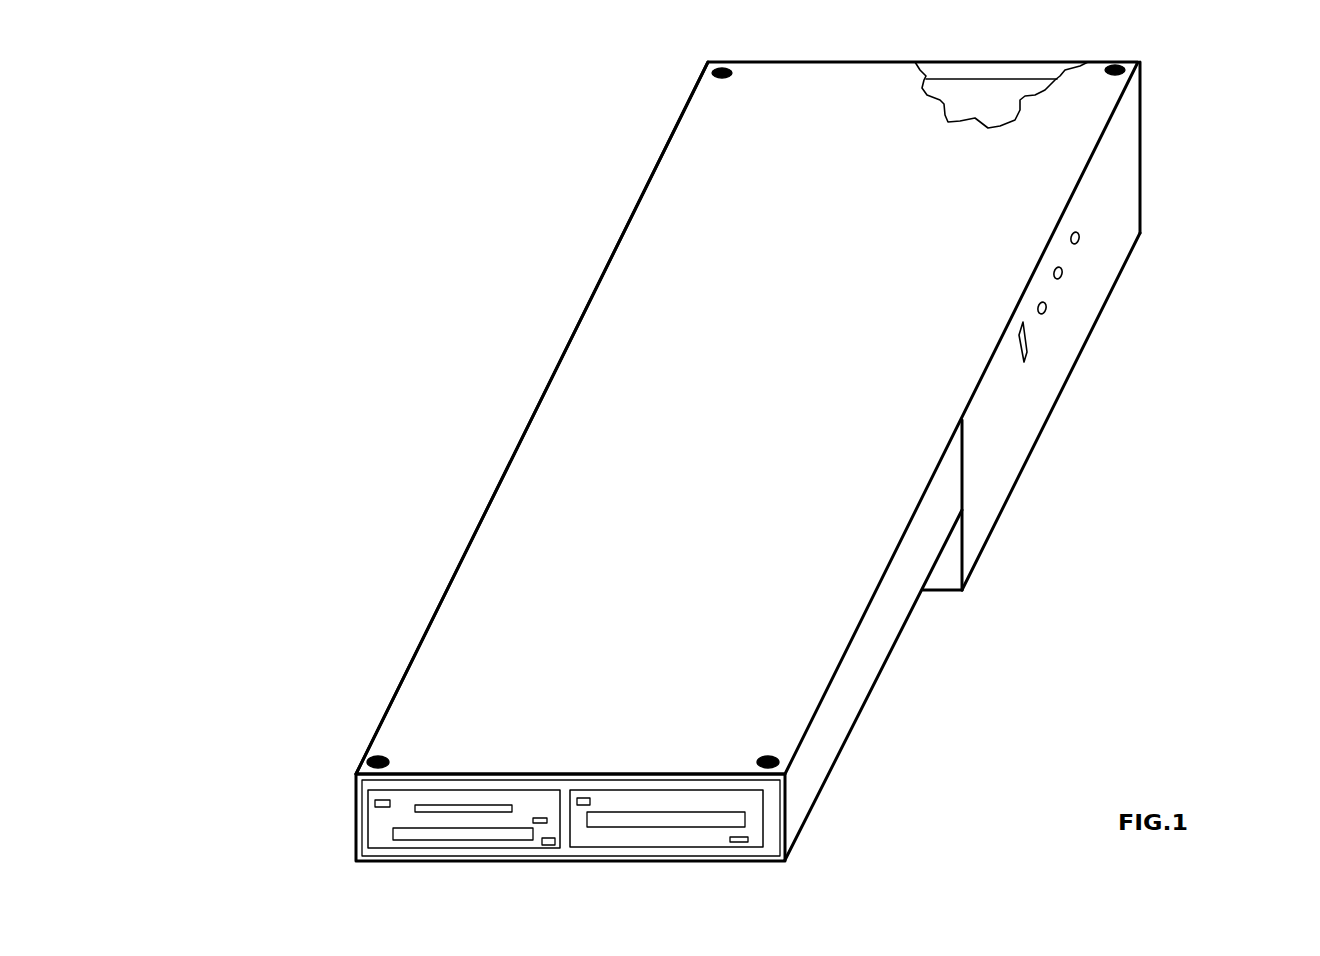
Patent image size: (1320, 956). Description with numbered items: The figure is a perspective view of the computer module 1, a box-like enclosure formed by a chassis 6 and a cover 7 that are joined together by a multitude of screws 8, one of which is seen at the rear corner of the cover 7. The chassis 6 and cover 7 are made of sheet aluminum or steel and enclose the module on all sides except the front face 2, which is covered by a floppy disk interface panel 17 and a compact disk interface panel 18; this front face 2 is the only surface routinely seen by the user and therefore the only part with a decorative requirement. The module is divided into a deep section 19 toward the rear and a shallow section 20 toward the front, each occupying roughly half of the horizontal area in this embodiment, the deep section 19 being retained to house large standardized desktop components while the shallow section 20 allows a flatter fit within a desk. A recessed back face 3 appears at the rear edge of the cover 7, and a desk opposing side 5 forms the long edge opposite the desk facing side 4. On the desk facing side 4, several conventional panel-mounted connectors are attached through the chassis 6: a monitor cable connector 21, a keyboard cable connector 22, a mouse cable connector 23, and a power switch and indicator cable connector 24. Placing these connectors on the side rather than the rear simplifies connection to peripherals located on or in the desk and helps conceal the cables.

The computer module 1 is at (736, 457).
The front face 2 is at (593, 834).
The recessed back face 3 is at (998, 97).
The desk facing side 4 is at (1036, 534).
The desk opposing side 5 is at (430, 622).
The chassis 6 is at (978, 515).
The cover 7 is at (640, 377).
The screw 8 is at (1128, 60).
The floppy disk interface panel 17 is at (392, 818).
The compact disk interface panel 18 is at (748, 802).
The deep section 19 is at (985, 588).
The shallow section 20 is at (800, 857).
The panel mount connector for monitor cable 21 is at (1027, 343).
The panel mount connector for keyboard cable 22 is at (1082, 234).
The panel mount connector for mouse cable 23 is at (1064, 271).
The panel mount connector for power switch cable 24 is at (1048, 308).